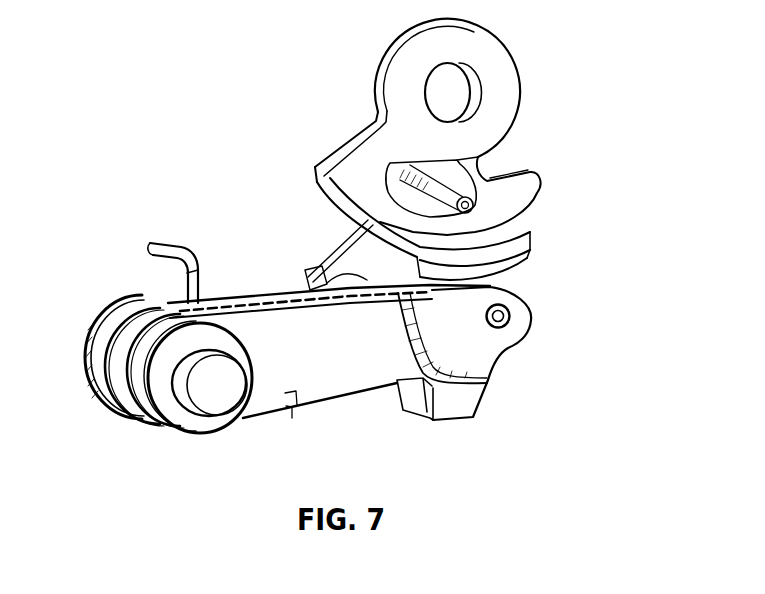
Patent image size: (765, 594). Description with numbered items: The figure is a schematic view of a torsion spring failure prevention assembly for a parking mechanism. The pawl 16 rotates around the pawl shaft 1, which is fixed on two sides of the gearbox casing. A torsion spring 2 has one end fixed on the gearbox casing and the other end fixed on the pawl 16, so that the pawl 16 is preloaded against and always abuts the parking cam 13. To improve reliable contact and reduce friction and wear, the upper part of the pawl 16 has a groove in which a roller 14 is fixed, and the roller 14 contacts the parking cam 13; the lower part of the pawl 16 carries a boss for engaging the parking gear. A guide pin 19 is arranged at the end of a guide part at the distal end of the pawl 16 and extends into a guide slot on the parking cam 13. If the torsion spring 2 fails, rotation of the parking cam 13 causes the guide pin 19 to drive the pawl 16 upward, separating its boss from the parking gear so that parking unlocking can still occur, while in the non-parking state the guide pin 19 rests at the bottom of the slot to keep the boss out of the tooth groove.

The pawl shaft 1 is at (218, 385).
The torsion spring 2 is at (152, 240).
The parking cam 13 is at (478, 120).
The roller 14 is at (492, 286).
The pawl 16 is at (457, 345).
The guide pin 19 is at (400, 183).